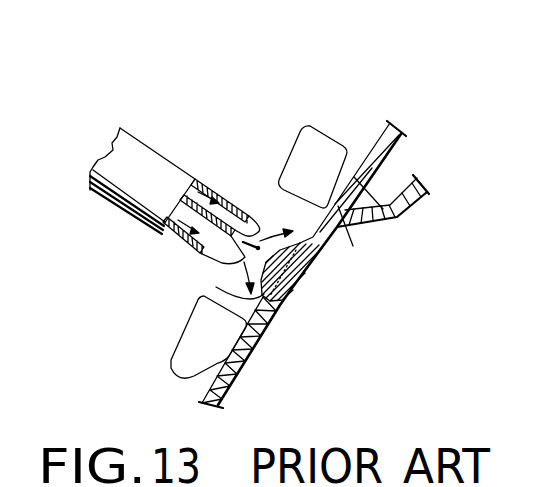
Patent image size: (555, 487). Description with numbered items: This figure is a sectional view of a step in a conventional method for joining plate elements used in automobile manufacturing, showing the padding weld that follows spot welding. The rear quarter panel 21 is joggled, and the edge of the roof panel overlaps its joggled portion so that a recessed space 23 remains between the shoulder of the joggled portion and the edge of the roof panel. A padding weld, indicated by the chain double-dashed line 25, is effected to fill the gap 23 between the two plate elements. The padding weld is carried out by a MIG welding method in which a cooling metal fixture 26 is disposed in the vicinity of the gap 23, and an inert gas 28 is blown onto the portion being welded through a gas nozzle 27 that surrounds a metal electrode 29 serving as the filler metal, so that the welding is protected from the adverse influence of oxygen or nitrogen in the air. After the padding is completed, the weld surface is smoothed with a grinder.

The rear quarter panel 21 is at (241, 371).
The recessed space 23 is at (296, 283).
The padding 25 is at (210, 284).
The cooling metal fixture 26 is at (318, 132).
The gas nozzle 27 is at (158, 134).
The inert gas 28 is at (197, 196).
The metal electrode 29 is at (232, 216).